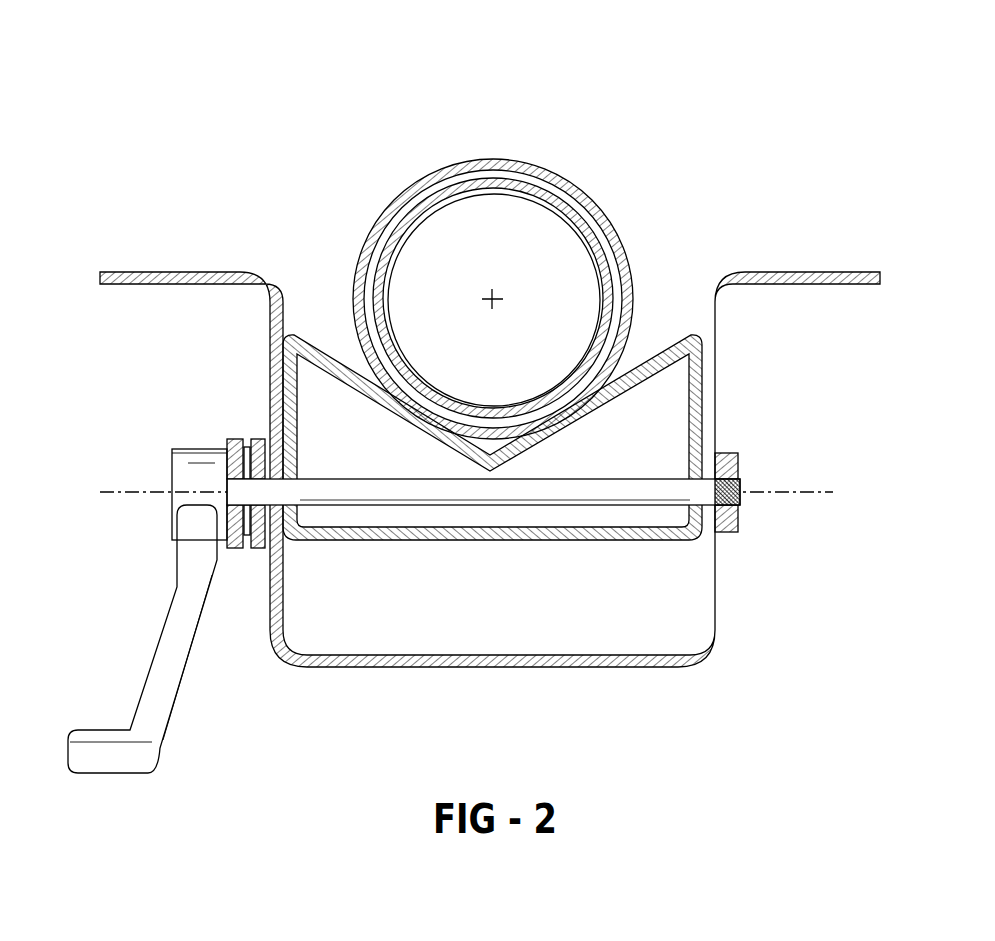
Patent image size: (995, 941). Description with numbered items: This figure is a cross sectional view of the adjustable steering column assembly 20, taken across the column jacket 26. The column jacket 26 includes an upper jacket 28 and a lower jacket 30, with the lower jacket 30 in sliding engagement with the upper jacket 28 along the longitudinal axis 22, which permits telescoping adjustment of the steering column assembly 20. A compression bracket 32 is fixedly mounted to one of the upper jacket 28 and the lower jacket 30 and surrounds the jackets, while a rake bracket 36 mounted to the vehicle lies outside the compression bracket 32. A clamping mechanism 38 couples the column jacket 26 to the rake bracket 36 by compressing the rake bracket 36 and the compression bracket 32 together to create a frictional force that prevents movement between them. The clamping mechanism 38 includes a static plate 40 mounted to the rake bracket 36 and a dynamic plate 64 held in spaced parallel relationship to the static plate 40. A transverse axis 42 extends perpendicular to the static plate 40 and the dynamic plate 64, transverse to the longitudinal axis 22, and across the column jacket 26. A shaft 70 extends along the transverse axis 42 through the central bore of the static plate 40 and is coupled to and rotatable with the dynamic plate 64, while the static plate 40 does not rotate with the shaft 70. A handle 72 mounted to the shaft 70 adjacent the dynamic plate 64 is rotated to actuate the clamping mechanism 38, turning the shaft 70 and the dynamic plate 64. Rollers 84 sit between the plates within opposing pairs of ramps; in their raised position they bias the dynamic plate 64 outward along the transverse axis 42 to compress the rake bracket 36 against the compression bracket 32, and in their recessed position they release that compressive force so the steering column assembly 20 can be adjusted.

The steering column assembly 20 is at (620, 108).
The longitudinal axis 22 is at (496, 295).
The column jacket 26 is at (437, 162).
The upper jacket 28 is at (620, 241).
The lower jacket 30 is at (594, 216).
The compression bracket 32 is at (657, 336).
The rake bracket 36 is at (805, 270).
The clamping mechanism 38 is at (255, 498).
The static plate 40 is at (259, 549).
The transverse axis 42 is at (822, 490).
The dynamic plate 64 is at (237, 550).
The shaft 70 is at (621, 508).
The handle 72 is at (153, 665).
The rollers 84 is at (249, 550).